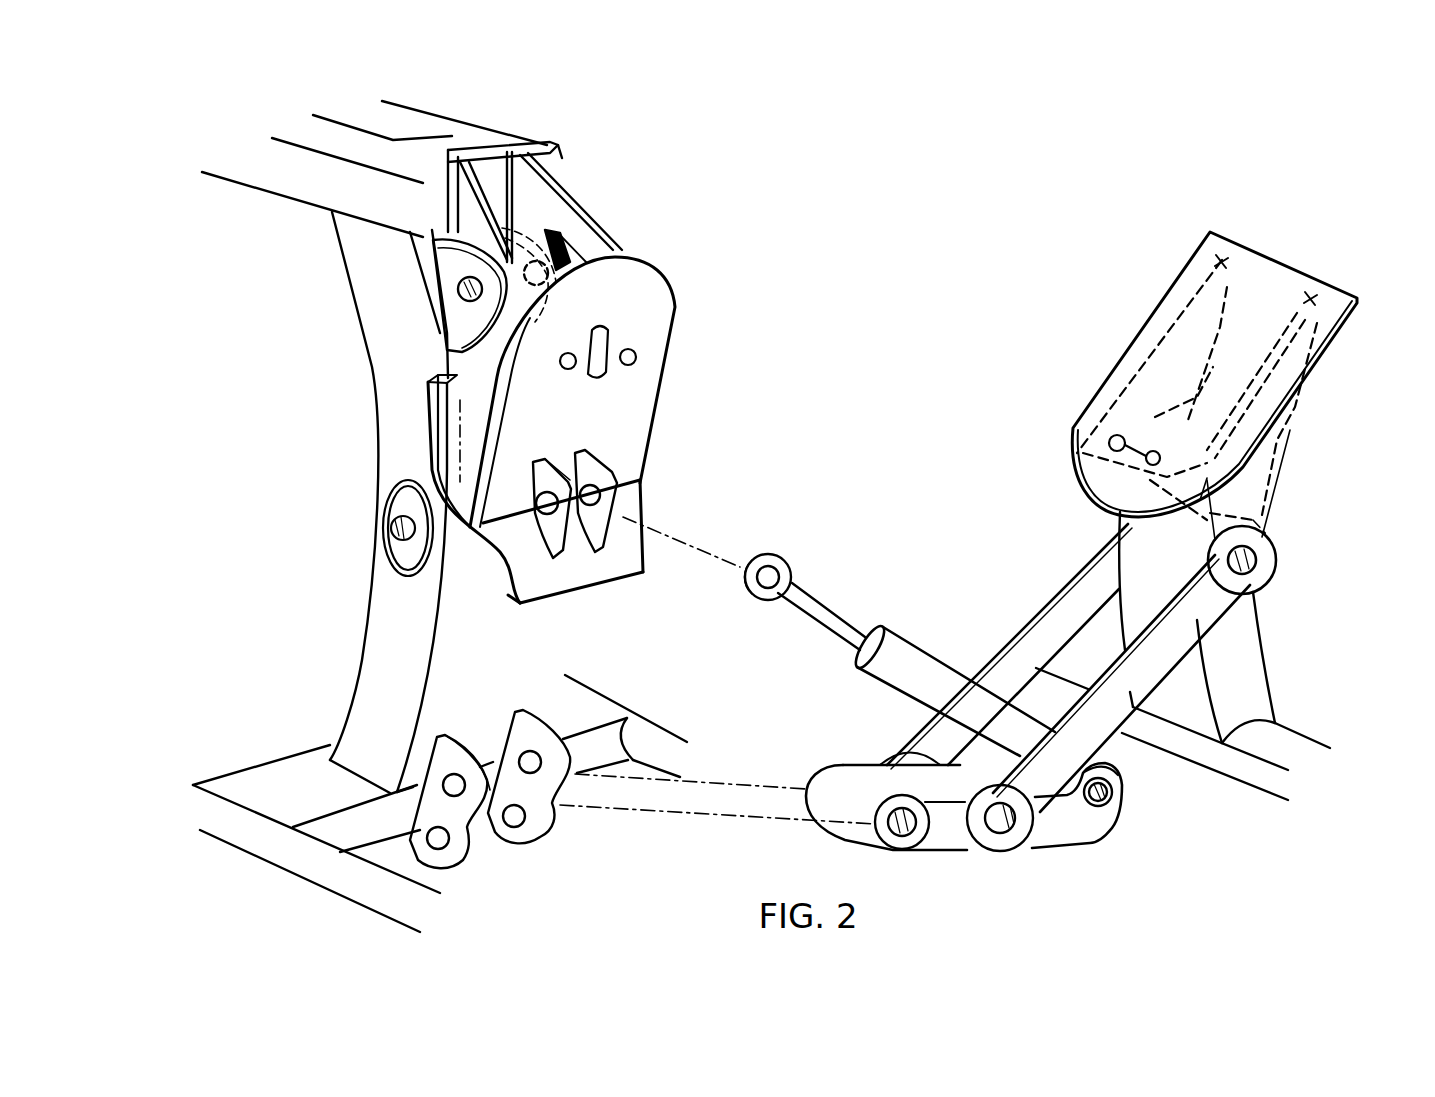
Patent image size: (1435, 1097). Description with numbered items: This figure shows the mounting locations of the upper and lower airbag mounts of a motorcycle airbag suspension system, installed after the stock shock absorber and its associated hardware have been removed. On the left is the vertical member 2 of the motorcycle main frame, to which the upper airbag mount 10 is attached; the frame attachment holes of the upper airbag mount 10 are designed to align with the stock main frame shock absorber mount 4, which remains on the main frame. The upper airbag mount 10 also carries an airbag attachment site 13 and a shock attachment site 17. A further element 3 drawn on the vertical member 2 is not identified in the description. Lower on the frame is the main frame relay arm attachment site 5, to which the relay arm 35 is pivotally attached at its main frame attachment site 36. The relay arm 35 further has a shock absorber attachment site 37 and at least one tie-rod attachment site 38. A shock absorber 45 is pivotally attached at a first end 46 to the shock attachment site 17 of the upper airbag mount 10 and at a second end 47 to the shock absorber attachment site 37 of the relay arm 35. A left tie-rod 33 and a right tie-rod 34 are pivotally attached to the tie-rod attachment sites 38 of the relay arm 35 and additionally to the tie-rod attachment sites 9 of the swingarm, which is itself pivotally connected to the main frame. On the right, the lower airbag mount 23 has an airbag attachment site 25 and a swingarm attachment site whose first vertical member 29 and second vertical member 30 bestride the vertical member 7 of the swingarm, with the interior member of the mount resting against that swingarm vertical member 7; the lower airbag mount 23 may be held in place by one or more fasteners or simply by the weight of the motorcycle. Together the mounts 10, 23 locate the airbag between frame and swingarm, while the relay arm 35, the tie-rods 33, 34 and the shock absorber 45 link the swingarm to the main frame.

The vertical member 2 is at (408, 603).
The bearing boss 3 is at (417, 528).
The stock main frame shock absorber mount 4 is at (525, 245).
The main frame relay arm attachment site 5 is at (480, 845).
The swingarm vertical member 7 is at (1177, 623).
The tie-rod attachment sites of the swingarm 9 is at (1257, 560).
The upper airbag mount 10 is at (630, 262).
The airbag attachment site 13 is at (620, 335).
The shock absorber attachment site 17 is at (613, 483).
The lower airbag mount 23 is at (1270, 283).
The airbag attachment site 25 is at (1137, 450).
The first vertical member 29 is at (1255, 480).
The second vertical member 30 is at (1193, 337).
The left tie-rod 33 is at (1240, 627).
The right tie-rod 34 is at (1093, 587).
The relay arm 35 is at (1073, 845).
The main frame attachment site 36 is at (905, 838).
The shock absorber attachment site 37 is at (1103, 792).
The tie-rod attachment sites 38 is at (997, 840).
The shock absorber 45 is at (903, 653).
The first end 46 is at (773, 567).
The second end 47 is at (1118, 768).